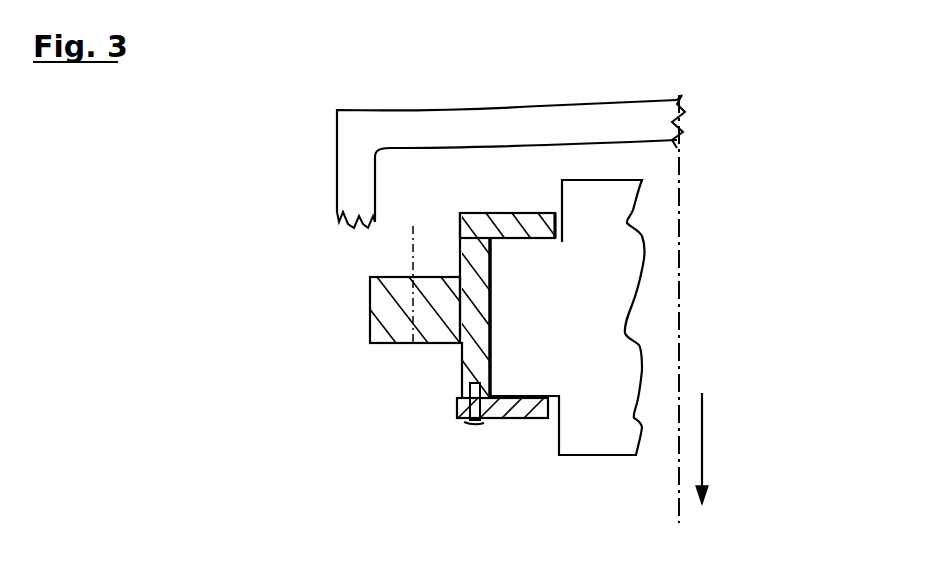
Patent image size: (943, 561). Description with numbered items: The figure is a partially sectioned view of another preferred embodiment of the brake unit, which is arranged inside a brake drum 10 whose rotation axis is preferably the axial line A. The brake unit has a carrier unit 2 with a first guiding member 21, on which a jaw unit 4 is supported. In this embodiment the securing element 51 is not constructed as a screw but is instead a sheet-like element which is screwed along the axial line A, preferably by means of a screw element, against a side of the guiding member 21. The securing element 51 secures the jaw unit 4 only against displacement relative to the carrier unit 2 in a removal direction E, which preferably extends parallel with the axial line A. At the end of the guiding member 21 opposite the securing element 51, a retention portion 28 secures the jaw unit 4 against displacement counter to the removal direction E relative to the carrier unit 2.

The brake drum 10 is at (349, 157).
The first guiding member 21 is at (470, 254).
The retention portion 28 is at (510, 226).
The carrier unit 2 is at (356, 313).
The jaw unit 4 is at (617, 237).
The securing element 51 is at (502, 421).
The axial line A is at (682, 308).
The removal direction E is at (703, 440).